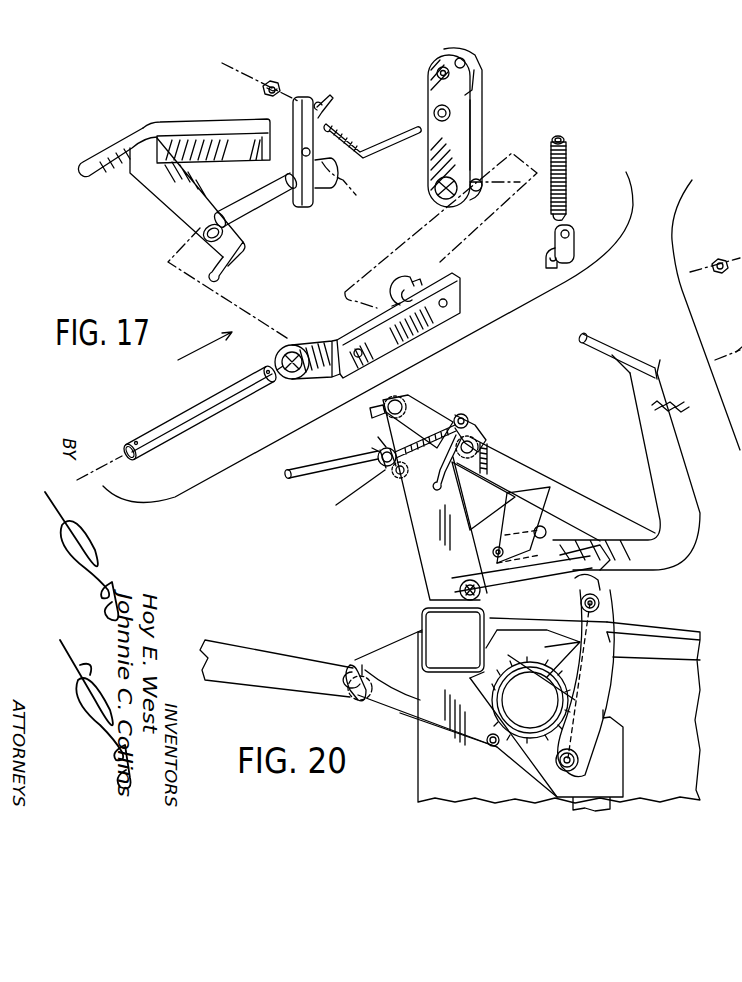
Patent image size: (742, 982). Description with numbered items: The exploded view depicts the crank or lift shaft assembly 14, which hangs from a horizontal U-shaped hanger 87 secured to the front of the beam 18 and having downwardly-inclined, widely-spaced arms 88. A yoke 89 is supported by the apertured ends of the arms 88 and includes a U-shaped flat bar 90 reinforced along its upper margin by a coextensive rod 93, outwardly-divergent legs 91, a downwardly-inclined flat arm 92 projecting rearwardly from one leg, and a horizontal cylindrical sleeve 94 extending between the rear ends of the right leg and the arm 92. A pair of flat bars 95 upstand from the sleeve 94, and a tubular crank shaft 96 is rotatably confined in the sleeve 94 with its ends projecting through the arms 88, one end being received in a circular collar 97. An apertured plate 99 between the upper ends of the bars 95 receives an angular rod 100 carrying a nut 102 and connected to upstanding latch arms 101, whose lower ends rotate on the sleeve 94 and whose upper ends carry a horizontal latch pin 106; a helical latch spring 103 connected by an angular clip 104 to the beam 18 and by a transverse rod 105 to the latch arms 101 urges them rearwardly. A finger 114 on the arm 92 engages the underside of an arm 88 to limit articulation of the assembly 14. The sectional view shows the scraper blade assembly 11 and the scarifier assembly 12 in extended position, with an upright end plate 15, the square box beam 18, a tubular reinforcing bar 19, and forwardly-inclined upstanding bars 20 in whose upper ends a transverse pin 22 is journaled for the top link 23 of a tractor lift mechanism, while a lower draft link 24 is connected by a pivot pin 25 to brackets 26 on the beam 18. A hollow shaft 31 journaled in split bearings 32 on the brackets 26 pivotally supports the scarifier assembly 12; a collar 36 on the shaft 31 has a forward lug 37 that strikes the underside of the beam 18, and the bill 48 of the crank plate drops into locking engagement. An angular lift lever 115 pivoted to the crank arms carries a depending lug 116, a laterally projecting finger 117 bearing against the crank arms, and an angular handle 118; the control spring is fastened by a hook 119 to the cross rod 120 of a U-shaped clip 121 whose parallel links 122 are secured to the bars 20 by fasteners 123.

In FIG. 17, the yoke 89 is at (80, 165).
In FIG. 17, the U-shaped flat bar 90 is at (186, 158).
In FIG. 17, the legs 91 is at (99, 178).
In FIG. 17, the flat bar or arm 92 is at (160, 192).
In FIG. 17, the coextensive rod 93 is at (206, 118).
In FIG. 17, the cylindrical sleeve 94 is at (262, 222).
In FIG. 17, the upstanding flat bars 95 is at (290, 170).
In FIG. 17, the crank shaft 96 is at (190, 408).
In FIG. 17, the collar 97 is at (398, 285).
In FIG. 17, the apertured plate 99 is at (310, 98).
In FIG. 17, the angular rod 100 is at (380, 128).
In FIG. 17, the latch arms 101 is at (480, 124).
In FIG. 17, the nut 102 is at (274, 84).
In FIG. 17, the latch spring 103 is at (568, 165).
In FIG. 17, the angular clip 104 is at (555, 236).
In FIG. 17, the transverse rod 105 is at (470, 92).
In FIG. 17, the latch pin 106 is at (437, 73).
In FIG. 17, the finger 114 is at (215, 278).
In FIG. 17, the mounting bracket or hanger 87 is at (400, 350).
In FIG. 17, the hanger arms 88 is at (302, 380).
In FIG. 17, the crank or lift shaft assembly 14 is at (170, 375).
In FIG. 20, the scraper blade assembly 11 is at (726, 778).
In FIG. 20, the scarifier assembly 12 is at (653, 773).
In FIG. 20, the end plates 15 is at (698, 718).
In FIG. 20, the box beam 18 is at (420, 622).
In FIG. 20, the reinforcing bars 19 is at (698, 647).
In FIG. 20, the upstanding bars 20 is at (410, 532).
In FIG. 20, the transverse pin 22 is at (418, 411).
In FIG. 20, the top link 23 is at (368, 411).
In FIG. 20, the draft links 24 is at (262, 642).
In FIG. 20, the pivot pins 25 is at (372, 665).
In FIG. 20, the brackets 26 is at (386, 702).
In FIG. 20, the shaft 31 is at (548, 728).
In FIG. 20, the split bearings 32 is at (504, 750).
In FIG. 20, the collar 36 is at (530, 760).
In FIG. 20, the lug 37 is at (472, 672).
In FIG. 20, the bill 48 is at (531, 700).
In FIG. 20, the lift lever 115 is at (634, 400).
In FIG. 20, the lug 116 is at (532, 573).
In FIG. 20, the finger 117 is at (552, 524).
In FIG. 20, the handle 118 is at (632, 340).
In FIG. 20, the hook 119 is at (380, 440).
In FIG. 20, the cross rod 120 is at (372, 450).
In FIG. 20, the U-shaped clip 121 is at (380, 468).
In FIG. 20, the links 122 is at (357, 493).
In FIG. 20, the fasteners 123 is at (398, 480).